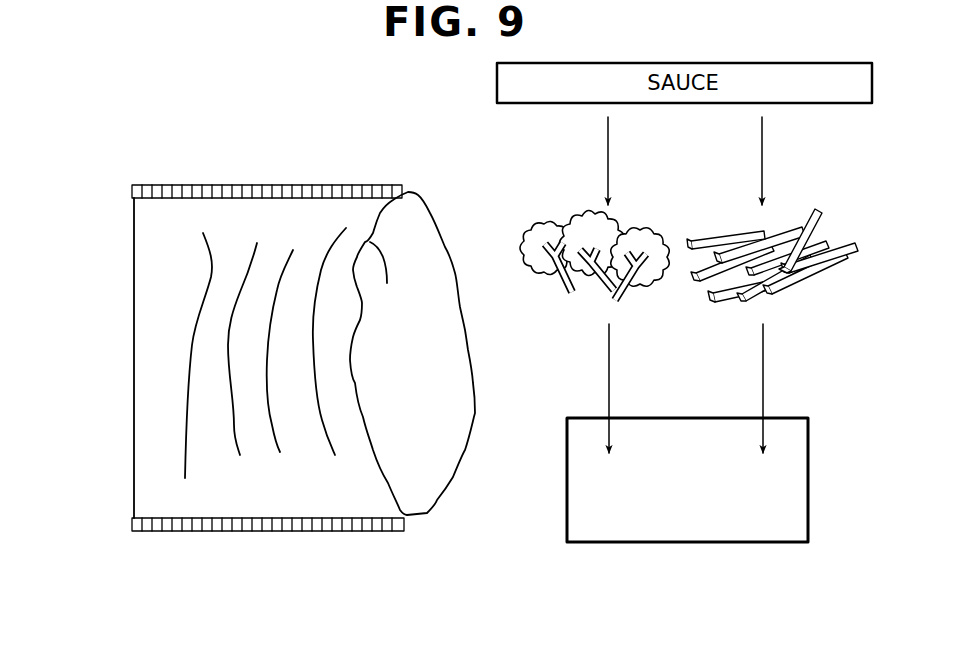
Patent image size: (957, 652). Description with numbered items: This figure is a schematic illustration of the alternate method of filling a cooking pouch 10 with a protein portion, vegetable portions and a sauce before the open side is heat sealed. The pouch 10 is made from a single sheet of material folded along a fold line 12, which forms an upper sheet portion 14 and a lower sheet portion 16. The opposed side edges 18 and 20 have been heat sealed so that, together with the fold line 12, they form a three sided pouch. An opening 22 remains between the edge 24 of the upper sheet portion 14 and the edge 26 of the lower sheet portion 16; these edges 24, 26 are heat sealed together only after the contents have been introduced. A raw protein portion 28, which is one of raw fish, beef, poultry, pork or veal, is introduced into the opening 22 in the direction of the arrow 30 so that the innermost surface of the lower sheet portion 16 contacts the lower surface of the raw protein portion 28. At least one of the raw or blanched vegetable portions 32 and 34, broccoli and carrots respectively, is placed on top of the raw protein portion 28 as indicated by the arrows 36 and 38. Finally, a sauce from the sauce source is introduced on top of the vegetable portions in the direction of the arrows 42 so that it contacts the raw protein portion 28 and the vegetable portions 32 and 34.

The pouch 10 is at (117, 244).
The fold line 12 is at (133, 358).
The upper sheet portion 14 is at (155, 459).
The lower sheet portion 16 is at (416, 485).
The side edge 18 is at (259, 185).
The side edge 20 is at (260, 532).
The opening 22 is at (424, 433).
The edge of upper sheet portion 24 is at (386, 277).
The edge of lower sheet portion 26 is at (466, 306).
The raw protein portion 28 is at (686, 544).
The arrow 30 is at (417, 369).
The raw or blanched vegetable portion 32 is at (530, 243).
The raw or blanched vegetable portion 34 is at (843, 257).
The arrow 36 is at (608, 378).
The arrow 38 is at (764, 377).
The arrows 42 is at (761, 147).